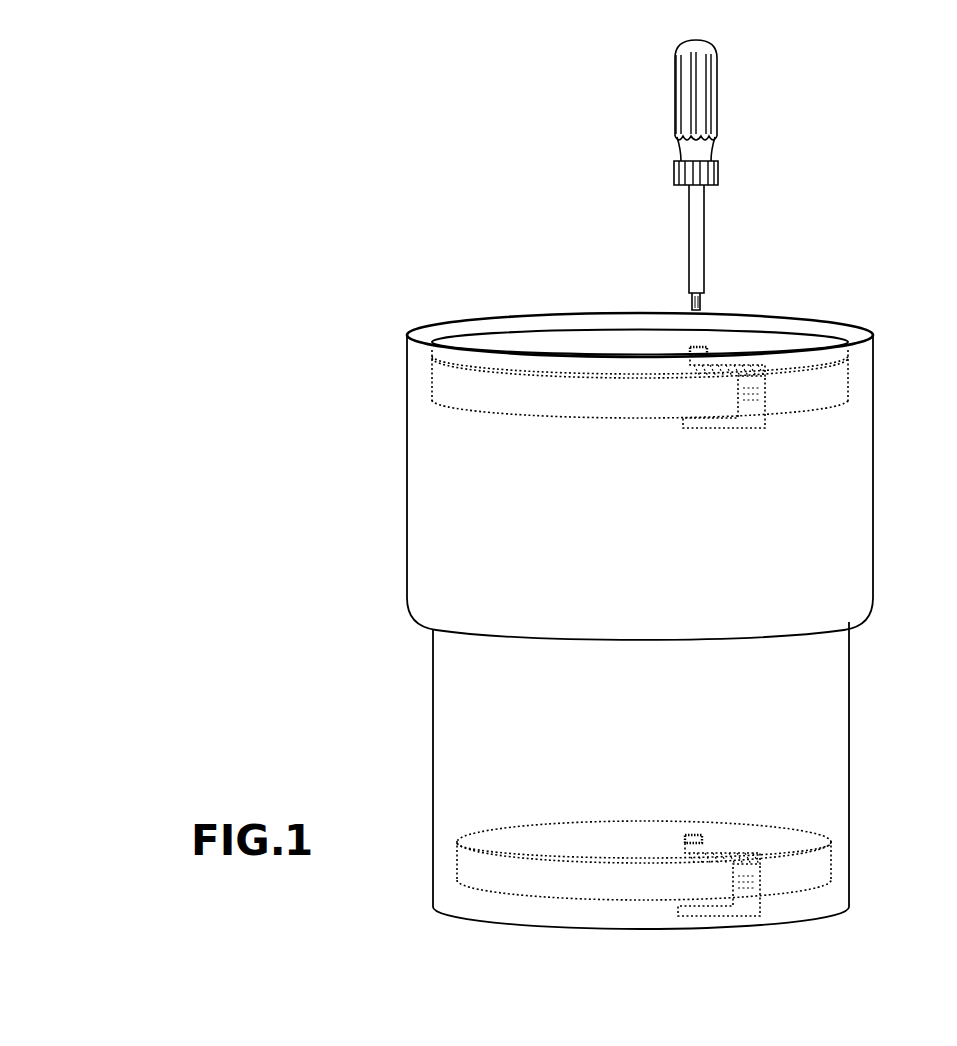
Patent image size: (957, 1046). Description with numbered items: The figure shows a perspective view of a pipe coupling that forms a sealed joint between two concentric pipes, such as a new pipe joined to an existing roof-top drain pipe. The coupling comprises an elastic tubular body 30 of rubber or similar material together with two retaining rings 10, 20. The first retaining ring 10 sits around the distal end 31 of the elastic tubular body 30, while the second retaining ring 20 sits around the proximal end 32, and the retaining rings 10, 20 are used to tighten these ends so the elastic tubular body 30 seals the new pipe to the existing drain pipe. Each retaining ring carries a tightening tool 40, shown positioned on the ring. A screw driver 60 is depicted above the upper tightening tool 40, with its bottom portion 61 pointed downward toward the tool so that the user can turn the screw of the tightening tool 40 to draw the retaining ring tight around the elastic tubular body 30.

The retaining ring 10 is at (832, 380).
The retaining ring 20 is at (822, 863).
The elastic tubular body 30 is at (858, 506).
The distal end 31 is at (854, 330).
The proximal end 32 is at (830, 907).
The tightening tool 40 is at (727, 423).
The screw driver 60 is at (703, 149).
The bottom portion 61 is at (701, 305).